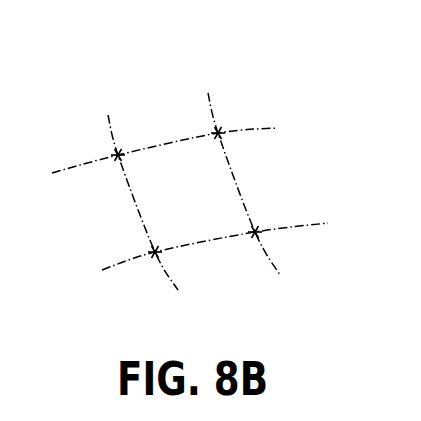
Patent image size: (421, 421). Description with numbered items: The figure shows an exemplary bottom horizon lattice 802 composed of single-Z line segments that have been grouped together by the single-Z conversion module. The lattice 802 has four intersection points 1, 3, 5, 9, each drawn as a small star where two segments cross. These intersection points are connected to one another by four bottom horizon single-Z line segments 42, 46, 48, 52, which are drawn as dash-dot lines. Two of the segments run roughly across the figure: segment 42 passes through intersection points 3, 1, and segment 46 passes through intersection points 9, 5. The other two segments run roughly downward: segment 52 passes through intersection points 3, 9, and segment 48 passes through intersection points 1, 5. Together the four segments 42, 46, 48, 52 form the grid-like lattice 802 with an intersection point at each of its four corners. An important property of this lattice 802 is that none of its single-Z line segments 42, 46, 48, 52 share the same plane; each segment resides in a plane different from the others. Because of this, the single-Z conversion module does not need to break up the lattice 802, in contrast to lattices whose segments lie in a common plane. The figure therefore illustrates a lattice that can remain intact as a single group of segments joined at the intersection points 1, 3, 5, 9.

The bottom horizon lattice 802 is at (282, 58).
The bottom horizon single-Z line segment 52 is at (107, 113).
The bottom horizon single-Z line segment 48 is at (207, 93).
The bottom horizon single-Z line segment 42 is at (277, 127).
The bottom horizon single-Z line segment 46 is at (327, 222).
The intersection point 3 is at (108, 147).
The intersection point 1 is at (221, 122).
The intersection point 9 is at (150, 265).
The intersection point 5 is at (264, 239).